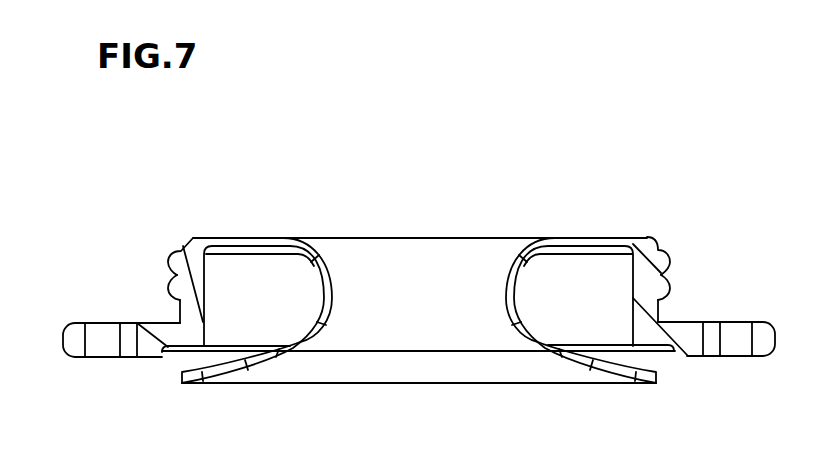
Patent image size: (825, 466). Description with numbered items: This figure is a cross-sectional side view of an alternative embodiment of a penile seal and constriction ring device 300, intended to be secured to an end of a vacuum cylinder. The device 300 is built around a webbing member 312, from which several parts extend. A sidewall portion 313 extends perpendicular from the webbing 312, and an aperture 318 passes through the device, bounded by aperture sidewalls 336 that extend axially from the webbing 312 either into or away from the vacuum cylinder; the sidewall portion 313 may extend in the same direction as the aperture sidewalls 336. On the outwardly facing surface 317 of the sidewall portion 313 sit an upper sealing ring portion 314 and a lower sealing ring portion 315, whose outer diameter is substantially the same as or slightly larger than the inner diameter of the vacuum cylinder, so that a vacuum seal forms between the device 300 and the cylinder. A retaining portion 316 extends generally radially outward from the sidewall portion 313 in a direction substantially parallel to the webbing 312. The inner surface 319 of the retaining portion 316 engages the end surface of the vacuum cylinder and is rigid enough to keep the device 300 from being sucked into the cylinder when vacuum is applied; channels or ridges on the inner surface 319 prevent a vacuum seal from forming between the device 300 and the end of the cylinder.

The penile seal and constriction ring device 300 is at (372, 234).
The webbing member 312 is at (229, 244).
The sidewall portion 313 is at (200, 295).
The upper sealing ring portion 314 is at (168, 268).
The lower sealing ring portion 315 is at (176, 300).
The retaining portion 316 is at (150, 349).
The outwardly facing surface 317 is at (179, 309).
The aperture 318 is at (408, 238).
The inner surface 319 is at (142, 322).
The aperture sidewalls 336 is at (323, 309).